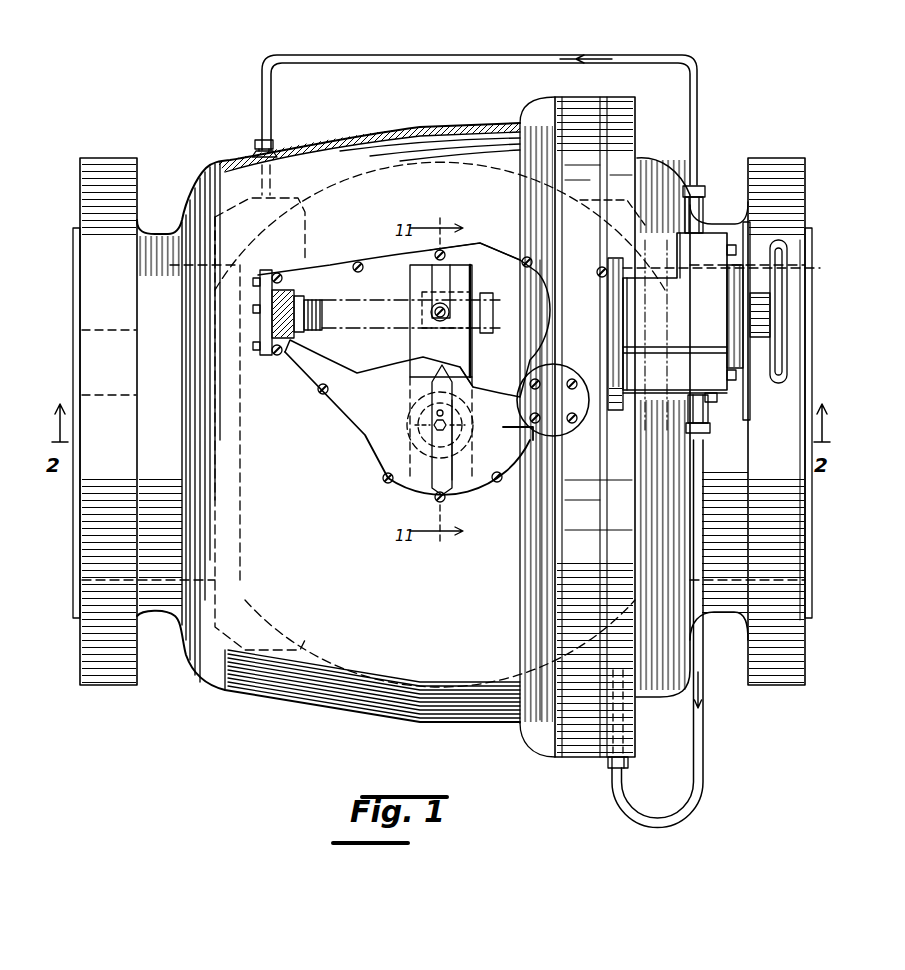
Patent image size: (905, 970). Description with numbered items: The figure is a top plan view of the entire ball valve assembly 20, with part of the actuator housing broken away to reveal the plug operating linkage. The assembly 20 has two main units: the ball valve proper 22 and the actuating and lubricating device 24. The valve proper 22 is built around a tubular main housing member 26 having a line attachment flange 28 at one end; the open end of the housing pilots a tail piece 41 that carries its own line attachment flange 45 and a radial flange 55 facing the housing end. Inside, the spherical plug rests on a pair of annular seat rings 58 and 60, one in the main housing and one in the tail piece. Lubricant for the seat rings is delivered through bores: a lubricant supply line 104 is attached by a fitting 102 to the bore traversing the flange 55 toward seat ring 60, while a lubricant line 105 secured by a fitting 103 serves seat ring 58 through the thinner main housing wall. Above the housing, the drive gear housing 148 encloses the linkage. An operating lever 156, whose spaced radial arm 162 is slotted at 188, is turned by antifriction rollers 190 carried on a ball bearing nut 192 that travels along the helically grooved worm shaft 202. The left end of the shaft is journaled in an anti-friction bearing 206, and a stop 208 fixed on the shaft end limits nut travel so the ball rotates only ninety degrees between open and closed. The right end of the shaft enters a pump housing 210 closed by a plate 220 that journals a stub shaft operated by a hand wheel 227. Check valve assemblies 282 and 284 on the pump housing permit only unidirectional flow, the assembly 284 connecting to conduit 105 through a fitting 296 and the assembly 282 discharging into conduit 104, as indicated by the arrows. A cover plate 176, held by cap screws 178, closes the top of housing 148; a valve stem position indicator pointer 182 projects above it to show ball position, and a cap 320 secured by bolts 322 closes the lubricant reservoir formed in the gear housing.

The ball valve assembly 20 is at (312, 716).
The ball valve proper 22 is at (470, 702).
The actuating and lubricating device 24 is at (513, 243).
The tubular main housing member 26 is at (526, 539).
The line attachment flange 28 is at (120, 172).
The tail piece 41 is at (726, 604).
The line attachment flange 45 is at (779, 166).
The radial flange 55 is at (636, 114).
The seat ring 58 is at (232, 214).
The seat ring 60 is at (604, 206).
The fitting 102 is at (628, 766).
The fitting 103 is at (257, 142).
The lubricant supply line 104 is at (703, 733).
The lubricant line 105 is at (321, 55).
The drive gear housing 148 is at (344, 259).
The operating lever 156 is at (482, 354).
The radial arm 162 is at (410, 352).
The cover plate 176 is at (572, 300).
The cap screws 178 is at (383, 478).
The valve stem position indicator pointer 182 is at (434, 396).
The slots 188 is at (446, 258).
The antifriction rollers 190 is at (428, 307).
The ball bearing nut 192 is at (495, 303).
The worm shaft 202 is at (381, 310).
The anti-friction bearing 206 is at (292, 348).
The stop 208 is at (306, 296).
The pump housing 210 is at (655, 286).
The plate 220 is at (742, 264).
The hand wheel 227 is at (787, 246).
The check valve assembly 282 is at (721, 421).
The check valve assembly 284 is at (715, 214).
The fitting 296 is at (701, 188).
The cap 320 is at (568, 434).
The bolts 322 is at (572, 366).